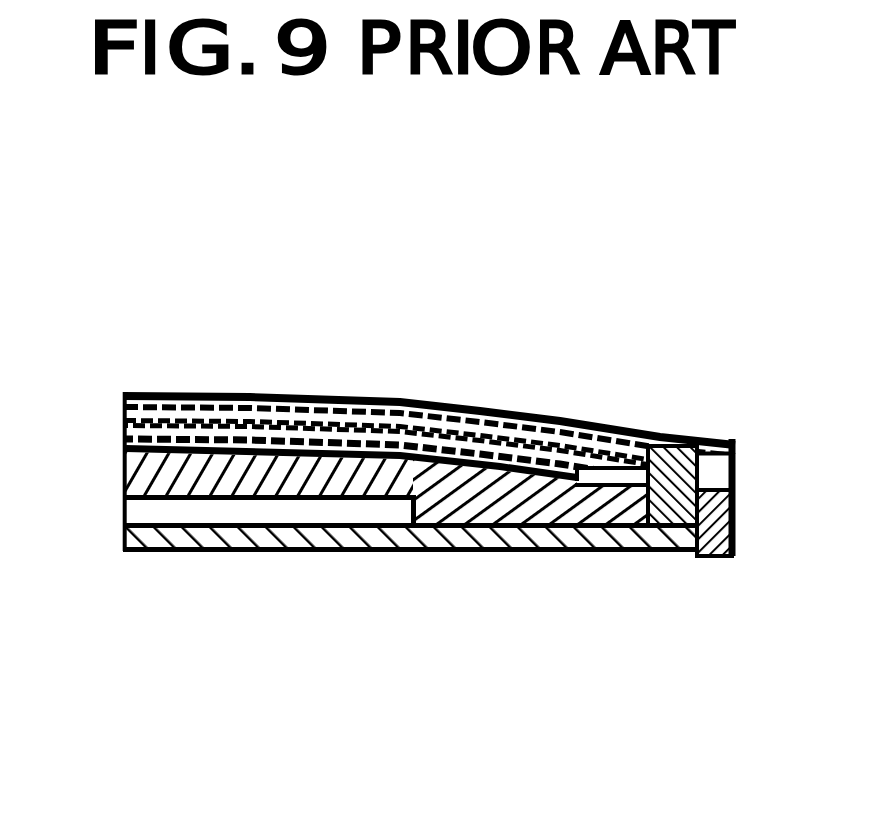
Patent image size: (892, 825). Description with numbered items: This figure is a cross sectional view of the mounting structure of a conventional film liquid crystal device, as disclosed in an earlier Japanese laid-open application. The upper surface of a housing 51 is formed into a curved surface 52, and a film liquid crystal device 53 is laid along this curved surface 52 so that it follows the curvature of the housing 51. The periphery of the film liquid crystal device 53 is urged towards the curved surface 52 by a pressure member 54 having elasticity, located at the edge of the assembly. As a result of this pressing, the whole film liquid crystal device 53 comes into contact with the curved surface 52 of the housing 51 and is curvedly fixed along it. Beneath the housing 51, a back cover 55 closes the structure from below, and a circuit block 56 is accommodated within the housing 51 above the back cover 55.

The housing 51 is at (435, 502).
The curved surface 52 is at (272, 392).
The film liquid crystal device 53 is at (395, 397).
The pressure member 54 is at (512, 408).
The back cover 55 is at (568, 533).
The circuit block 56 is at (203, 518).